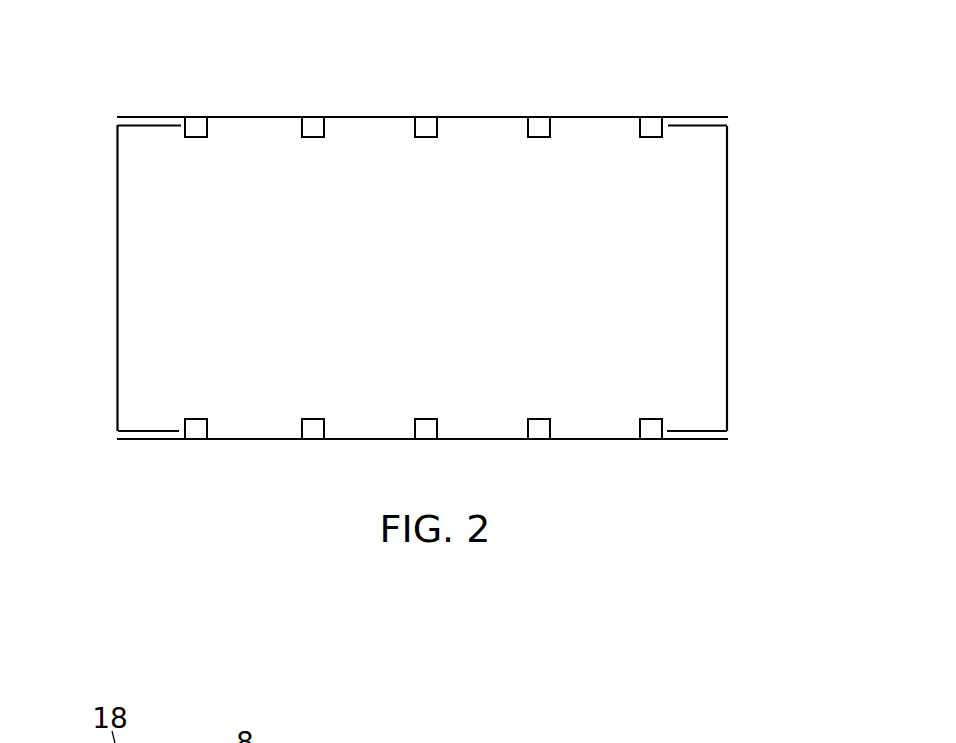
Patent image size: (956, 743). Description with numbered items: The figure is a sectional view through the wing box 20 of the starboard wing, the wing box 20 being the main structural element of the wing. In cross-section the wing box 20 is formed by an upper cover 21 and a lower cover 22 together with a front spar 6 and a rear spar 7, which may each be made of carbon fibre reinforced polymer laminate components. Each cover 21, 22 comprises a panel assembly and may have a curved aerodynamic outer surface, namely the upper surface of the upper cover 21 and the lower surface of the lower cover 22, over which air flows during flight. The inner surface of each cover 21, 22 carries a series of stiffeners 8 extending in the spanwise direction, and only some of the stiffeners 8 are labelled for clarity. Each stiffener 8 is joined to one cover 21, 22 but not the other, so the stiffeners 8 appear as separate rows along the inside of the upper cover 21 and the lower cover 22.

The wing box 20 is at (740, 88).
The upper cover 21 is at (282, 116).
The lower cover 22 is at (259, 440).
The front spar 6 is at (117, 233).
The rear spar 7 is at (729, 312).
The stiffeners 8 is at (325, 122).